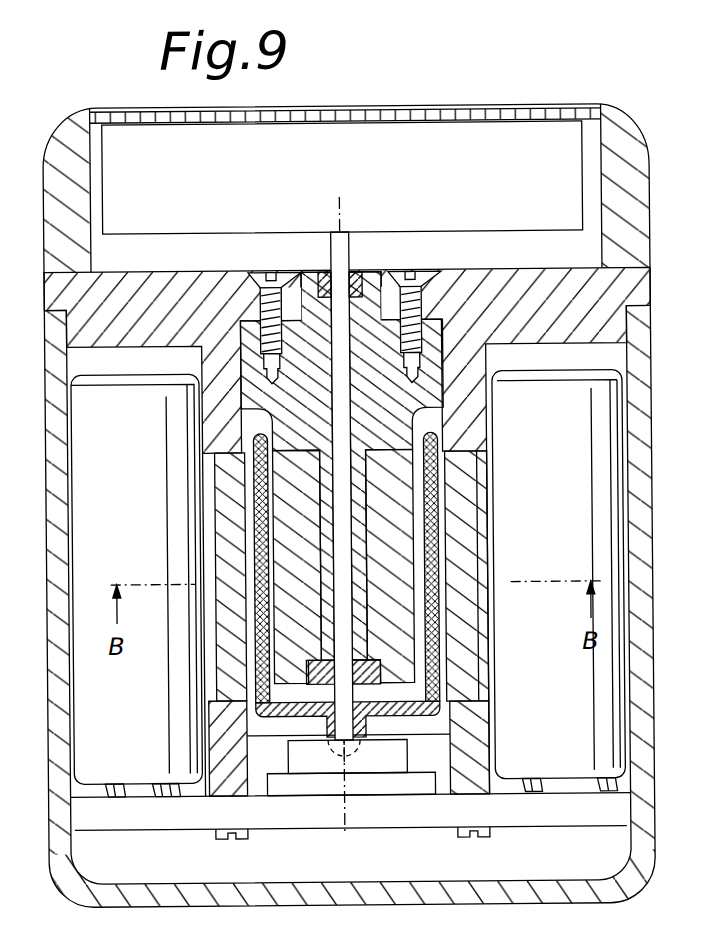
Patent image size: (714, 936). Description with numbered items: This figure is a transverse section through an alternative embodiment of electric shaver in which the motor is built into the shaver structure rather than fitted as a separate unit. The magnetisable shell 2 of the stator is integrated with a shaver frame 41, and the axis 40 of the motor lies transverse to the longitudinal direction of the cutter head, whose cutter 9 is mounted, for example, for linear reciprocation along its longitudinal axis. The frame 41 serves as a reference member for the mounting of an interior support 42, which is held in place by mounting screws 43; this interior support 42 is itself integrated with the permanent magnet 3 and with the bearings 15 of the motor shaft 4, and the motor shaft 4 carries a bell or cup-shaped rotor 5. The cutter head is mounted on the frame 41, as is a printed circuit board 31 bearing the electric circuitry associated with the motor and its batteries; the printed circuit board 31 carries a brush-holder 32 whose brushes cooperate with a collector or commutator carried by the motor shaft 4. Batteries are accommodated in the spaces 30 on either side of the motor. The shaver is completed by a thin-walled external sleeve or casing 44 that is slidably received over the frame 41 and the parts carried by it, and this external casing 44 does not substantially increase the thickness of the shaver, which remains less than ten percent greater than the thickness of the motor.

The magnetisable shell 2 is at (458, 484).
The permanent magnet 3 is at (402, 532).
The motor shaft 4 is at (356, 428).
The bell or cup-shaped rotor 5 is at (432, 629).
The cutter 9 is at (367, 145).
The bearings 15 is at (326, 272).
The spaces 30 is at (150, 362).
The printed circuit board 31 is at (526, 812).
The brush-holder 32 is at (381, 765).
The axis of the motor 40 is at (344, 224).
The shaver frame 41 is at (553, 296).
The interior support 42 is at (368, 288).
The mounting screws 43 is at (420, 298).
The external sleeve or casing 44 is at (640, 534).